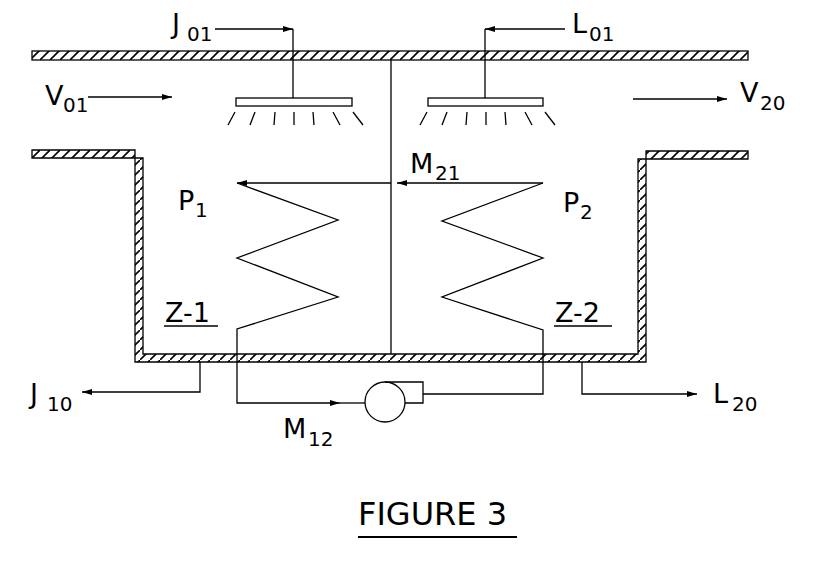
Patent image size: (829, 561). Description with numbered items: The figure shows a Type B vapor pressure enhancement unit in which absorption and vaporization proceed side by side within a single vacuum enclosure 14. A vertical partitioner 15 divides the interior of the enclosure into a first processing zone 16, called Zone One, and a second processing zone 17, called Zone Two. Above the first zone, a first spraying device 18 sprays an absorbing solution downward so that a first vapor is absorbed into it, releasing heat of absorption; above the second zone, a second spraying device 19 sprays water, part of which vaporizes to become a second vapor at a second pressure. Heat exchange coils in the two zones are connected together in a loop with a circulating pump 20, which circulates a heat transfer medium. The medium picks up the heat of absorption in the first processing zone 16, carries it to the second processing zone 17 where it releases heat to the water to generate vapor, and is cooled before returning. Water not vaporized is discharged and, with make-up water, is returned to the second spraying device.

The vacuum enclosure 14 is at (132, 207).
The vertical partitioner 15 is at (384, 205).
The first processing zone 16 is at (212, 270).
The second processing zone 17 is at (600, 270).
The first spraying device 18 is at (307, 77).
The second spraying device 19 is at (479, 77).
The circulating pump 20 is at (398, 418).